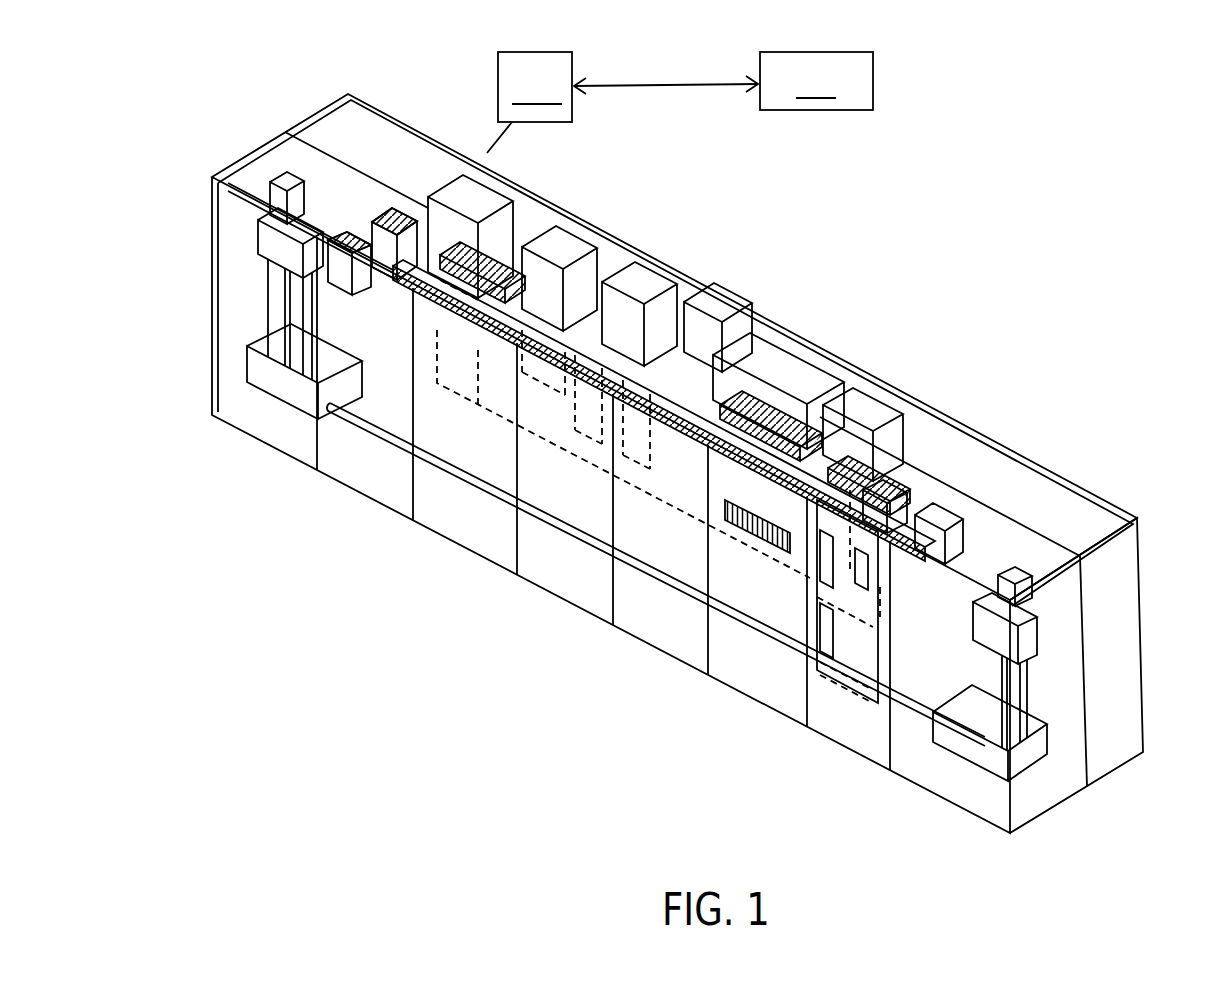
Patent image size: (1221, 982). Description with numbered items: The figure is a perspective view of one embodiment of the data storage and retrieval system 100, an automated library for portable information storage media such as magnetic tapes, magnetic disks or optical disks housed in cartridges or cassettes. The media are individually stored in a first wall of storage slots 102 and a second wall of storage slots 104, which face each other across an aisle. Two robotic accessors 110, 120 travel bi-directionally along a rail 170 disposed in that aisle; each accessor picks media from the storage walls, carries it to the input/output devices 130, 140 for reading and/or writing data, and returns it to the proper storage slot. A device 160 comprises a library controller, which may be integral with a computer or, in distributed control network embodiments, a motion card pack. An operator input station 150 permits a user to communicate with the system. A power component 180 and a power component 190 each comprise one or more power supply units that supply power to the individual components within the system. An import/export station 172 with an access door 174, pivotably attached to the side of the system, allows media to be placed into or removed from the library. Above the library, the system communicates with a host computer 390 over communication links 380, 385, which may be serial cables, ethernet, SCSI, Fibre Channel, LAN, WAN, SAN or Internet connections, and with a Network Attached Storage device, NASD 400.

The data storage and retrieval system 100 is at (743, 750).
The first wall of storage slots 102 is at (505, 250).
The second wall of storage slots 104 is at (447, 427).
The accessor 110 is at (267, 243).
The accessor 120 is at (1040, 632).
The input/output device 130 is at (653, 278).
The input/output device 140 is at (697, 307).
The operator input station 150 is at (583, 243).
The library controller 160 is at (500, 187).
The rail 170 is at (553, 522).
The import/export station 172 is at (867, 700).
The access door 174 is at (823, 700).
The power component 180 is at (933, 515).
The power component 190 is at (920, 565).
The communication link 380 is at (487, 153).
The communication link 385 is at (690, 88).
The host computer 390 is at (816, 81).
The NASD 400 is at (512, 122).